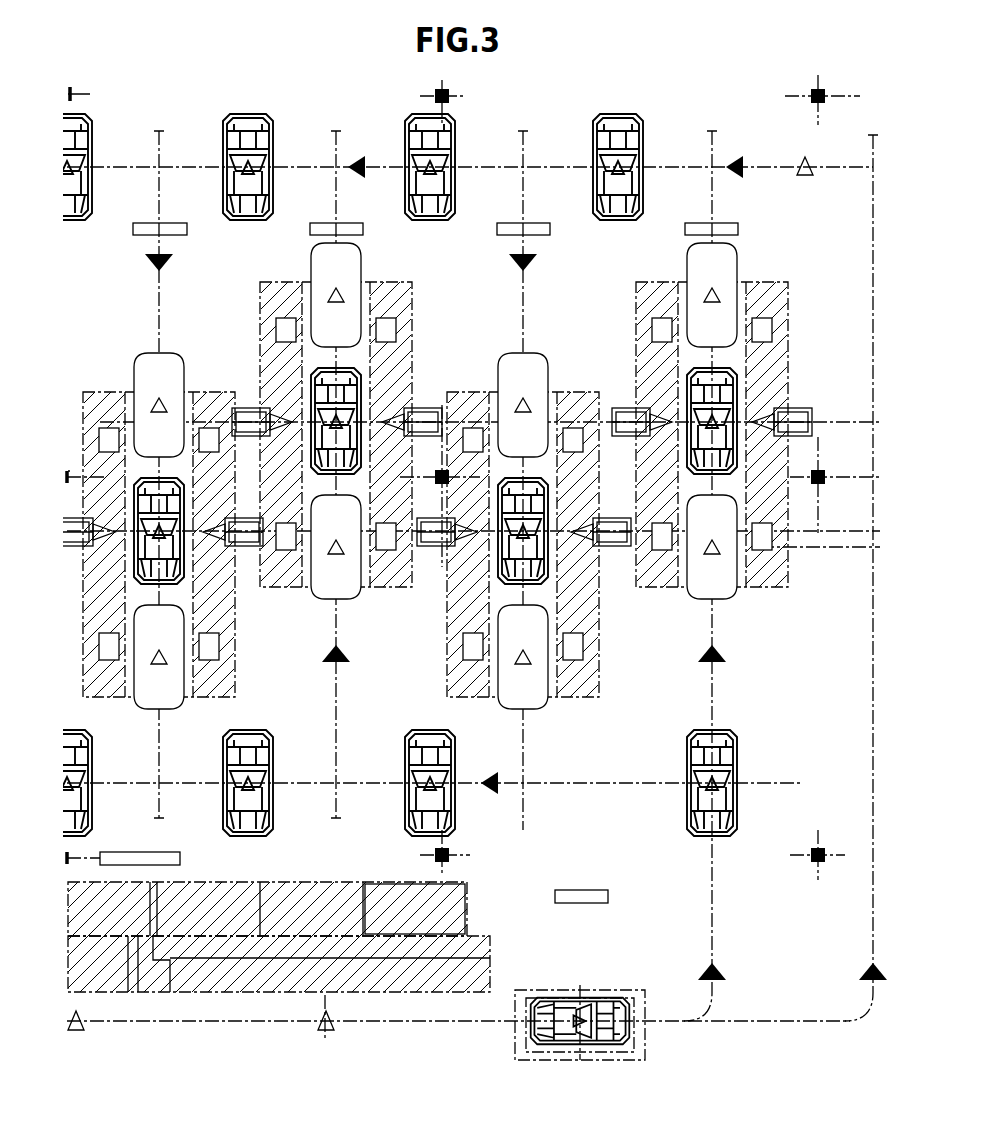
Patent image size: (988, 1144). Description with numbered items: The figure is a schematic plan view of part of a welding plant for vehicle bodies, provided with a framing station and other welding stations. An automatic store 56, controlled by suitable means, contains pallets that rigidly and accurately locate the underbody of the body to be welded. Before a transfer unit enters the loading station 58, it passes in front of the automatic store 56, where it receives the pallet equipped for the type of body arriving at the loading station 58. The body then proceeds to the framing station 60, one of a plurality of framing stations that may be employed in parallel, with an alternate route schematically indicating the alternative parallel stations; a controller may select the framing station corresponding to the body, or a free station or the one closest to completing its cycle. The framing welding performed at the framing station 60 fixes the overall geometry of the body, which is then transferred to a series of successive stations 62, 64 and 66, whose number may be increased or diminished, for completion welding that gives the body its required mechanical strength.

The automatic store 56 is at (294, 905).
The loading station 58 is at (575, 968).
The framing station 60 is at (806, 338).
The successive station 62 is at (614, 655).
The successive station 64 is at (384, 594).
The successive station 66 is at (236, 646).